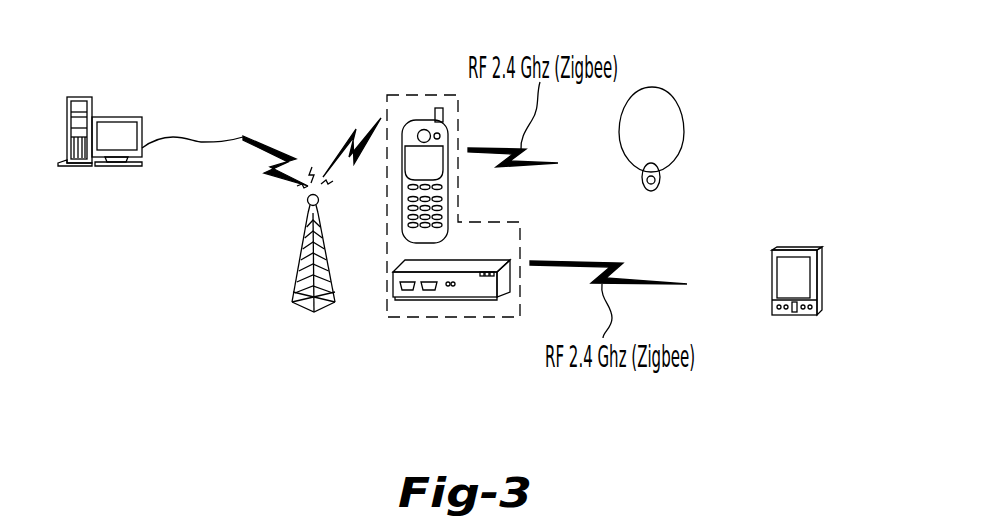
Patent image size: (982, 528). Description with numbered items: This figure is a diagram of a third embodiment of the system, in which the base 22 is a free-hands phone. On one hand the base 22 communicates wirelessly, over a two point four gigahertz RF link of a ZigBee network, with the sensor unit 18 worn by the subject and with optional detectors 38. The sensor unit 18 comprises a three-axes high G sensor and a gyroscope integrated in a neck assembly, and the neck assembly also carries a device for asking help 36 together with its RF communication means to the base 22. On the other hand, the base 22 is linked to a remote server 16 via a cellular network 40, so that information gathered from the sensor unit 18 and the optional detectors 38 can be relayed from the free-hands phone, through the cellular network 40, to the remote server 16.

The remote server 16 is at (105, 165).
The cellular network 40 is at (272, 204).
The base 22 is at (480, 317).
The sensor unit 18 is at (677, 97).
The device for asking help 36 is at (661, 179).
The optional detectors 38 is at (822, 281).